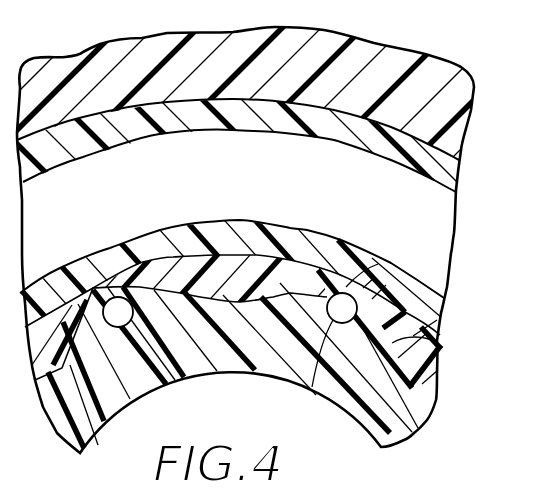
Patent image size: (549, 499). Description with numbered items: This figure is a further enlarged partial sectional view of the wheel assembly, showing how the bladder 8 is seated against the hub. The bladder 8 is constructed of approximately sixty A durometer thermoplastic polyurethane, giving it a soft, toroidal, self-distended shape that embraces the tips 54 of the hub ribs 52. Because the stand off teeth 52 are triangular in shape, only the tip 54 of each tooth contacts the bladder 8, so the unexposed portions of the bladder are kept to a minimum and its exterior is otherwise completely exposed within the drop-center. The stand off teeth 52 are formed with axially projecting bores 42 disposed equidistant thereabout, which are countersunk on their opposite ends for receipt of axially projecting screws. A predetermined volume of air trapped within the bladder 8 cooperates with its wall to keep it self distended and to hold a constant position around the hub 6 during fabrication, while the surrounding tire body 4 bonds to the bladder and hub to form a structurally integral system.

The outer ring 4 is at (464, 82).
The bladder 8 is at (447, 173).
The tips 54 is at (378, 265).
The hub ribs 52 is at (437, 343).
The axially projecting bores 42 is at (316, 384).
The hub 6 is at (406, 428).